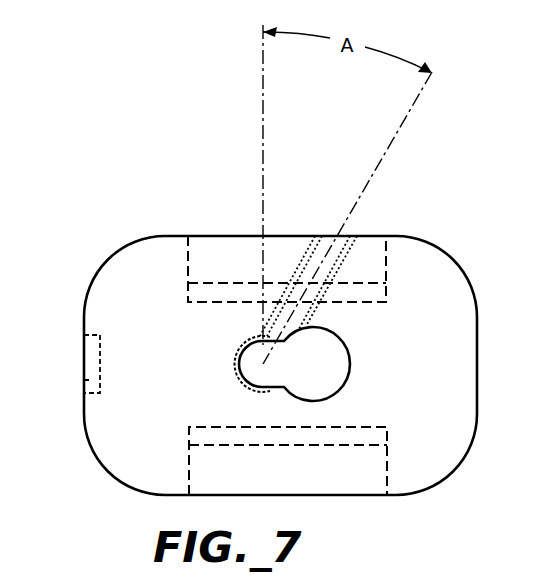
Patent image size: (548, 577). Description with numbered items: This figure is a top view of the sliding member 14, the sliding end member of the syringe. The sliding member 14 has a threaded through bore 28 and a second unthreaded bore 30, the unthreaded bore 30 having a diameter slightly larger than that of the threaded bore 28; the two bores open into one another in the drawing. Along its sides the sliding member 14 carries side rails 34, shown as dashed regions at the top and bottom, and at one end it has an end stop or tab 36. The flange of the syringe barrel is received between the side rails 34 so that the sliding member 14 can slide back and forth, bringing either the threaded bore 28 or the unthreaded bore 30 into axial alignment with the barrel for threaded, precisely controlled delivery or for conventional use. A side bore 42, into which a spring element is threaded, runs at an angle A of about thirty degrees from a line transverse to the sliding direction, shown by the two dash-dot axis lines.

The sliding member 14 is at (409, 178).
The threaded through bore 28 is at (240, 381).
The unthreaded bore 30 is at (350, 356).
The side rails 34 is at (212, 250).
The end stop or tab 36 is at (88, 380).
The side bore 42 is at (302, 258).